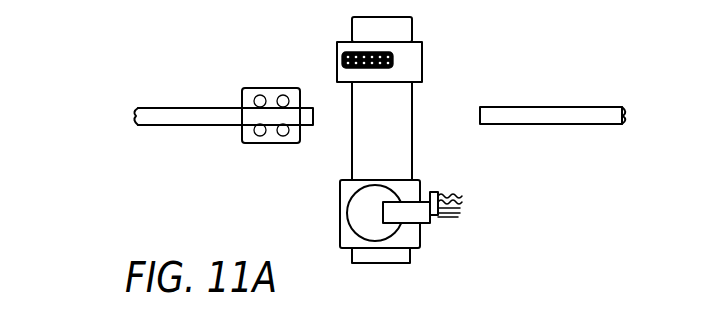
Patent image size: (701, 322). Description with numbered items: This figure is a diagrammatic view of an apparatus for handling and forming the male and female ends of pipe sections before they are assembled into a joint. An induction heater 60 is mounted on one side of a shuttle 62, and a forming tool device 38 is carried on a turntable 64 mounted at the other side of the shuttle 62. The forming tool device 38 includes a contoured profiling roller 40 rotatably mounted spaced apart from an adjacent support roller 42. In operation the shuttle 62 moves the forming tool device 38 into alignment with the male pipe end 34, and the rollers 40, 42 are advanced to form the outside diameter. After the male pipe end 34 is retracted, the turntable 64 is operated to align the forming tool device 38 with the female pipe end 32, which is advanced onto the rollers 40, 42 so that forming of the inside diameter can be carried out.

The female pipe end 32 is at (307, 108).
The male pipe end 34 is at (506, 107).
The forming tool device 38 is at (438, 232).
The contoured profiling roller 40 is at (461, 198).
The support roller 42 is at (460, 214).
The induction heater 60 is at (419, 47).
The shuttle 62 is at (367, 152).
The turntable 64 is at (346, 229).